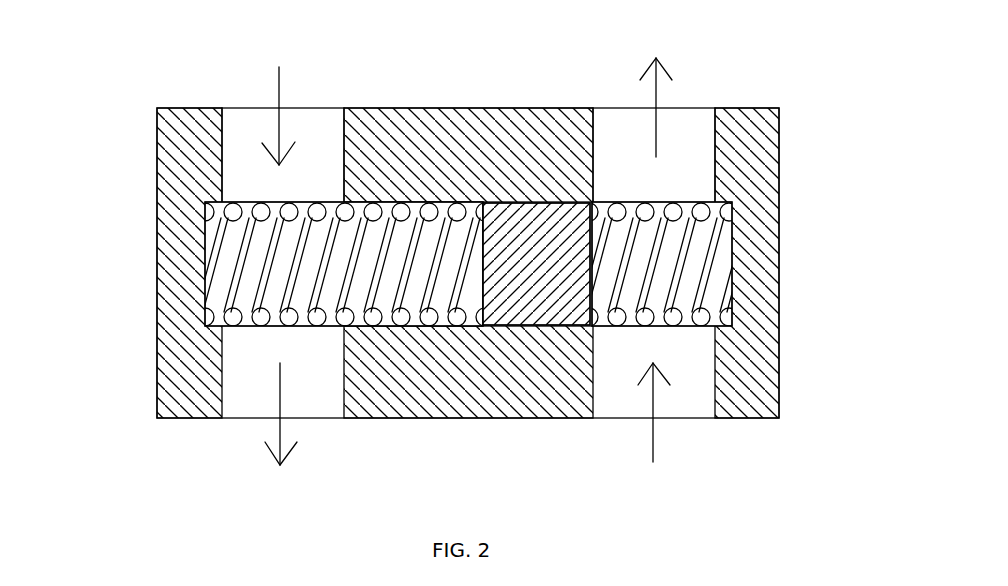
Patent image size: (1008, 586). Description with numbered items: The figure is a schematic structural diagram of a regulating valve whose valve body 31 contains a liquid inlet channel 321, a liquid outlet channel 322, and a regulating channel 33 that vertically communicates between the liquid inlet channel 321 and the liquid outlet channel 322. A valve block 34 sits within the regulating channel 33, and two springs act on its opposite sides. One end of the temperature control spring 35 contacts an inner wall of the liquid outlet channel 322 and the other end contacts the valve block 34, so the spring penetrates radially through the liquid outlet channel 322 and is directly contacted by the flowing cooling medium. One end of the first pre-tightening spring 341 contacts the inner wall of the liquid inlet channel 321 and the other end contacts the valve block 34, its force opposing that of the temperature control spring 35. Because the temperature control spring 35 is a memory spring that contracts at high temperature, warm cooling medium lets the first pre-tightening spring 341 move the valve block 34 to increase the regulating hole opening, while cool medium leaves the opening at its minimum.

The valve body 31 is at (168, 145).
The regulating channel 33 is at (468, 200).
The valve block 34 is at (533, 300).
The temperature control spring 35 is at (223, 283).
The liquid inlet channel 321 is at (593, 143).
The liquid outlet channel 322 is at (222, 152).
The first pre-tightening spring 341 is at (687, 263).